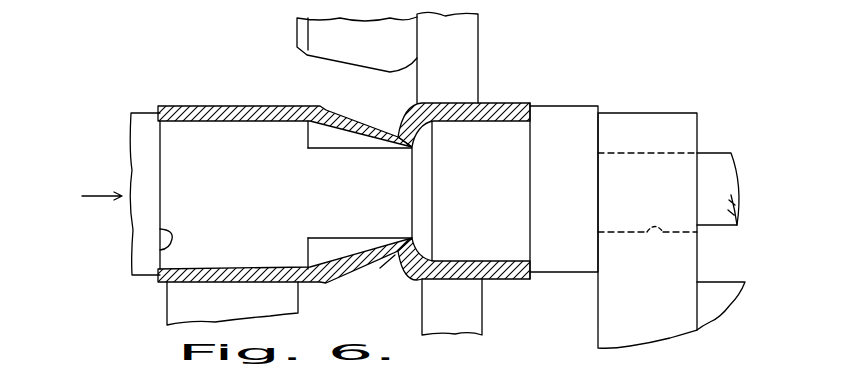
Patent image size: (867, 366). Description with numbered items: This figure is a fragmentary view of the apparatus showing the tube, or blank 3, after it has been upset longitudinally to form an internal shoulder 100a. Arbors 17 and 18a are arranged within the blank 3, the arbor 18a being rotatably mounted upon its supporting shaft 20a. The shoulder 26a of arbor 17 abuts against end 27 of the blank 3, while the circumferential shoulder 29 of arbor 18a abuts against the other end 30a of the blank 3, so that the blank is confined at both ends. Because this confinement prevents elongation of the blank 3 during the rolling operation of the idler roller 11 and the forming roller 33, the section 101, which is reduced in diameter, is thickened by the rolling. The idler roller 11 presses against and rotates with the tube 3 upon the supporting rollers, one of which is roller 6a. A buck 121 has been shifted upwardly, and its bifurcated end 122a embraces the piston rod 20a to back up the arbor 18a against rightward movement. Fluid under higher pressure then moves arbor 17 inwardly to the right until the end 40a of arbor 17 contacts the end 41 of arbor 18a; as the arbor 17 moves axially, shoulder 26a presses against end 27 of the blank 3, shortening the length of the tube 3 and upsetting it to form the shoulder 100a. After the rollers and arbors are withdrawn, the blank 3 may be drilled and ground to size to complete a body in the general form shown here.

The blank 3 is at (281, 110).
The arbor 17 is at (232, 138).
The forming roller 33 is at (322, 35).
The idler roller 11 is at (476, 43).
The arbor 18a is at (517, 137).
The end of arbor 18a 41 is at (412, 172).
The end of arbor 17 40a is at (413, 205).
The circumferential shoulder 29 is at (530, 203).
The end of blank 30a is at (532, 272).
The supporting shaft 20a is at (715, 160).
The bifurcated end 122a is at (672, 233).
The buck 121 is at (671, 230).
The shoulder 26a is at (160, 246).
The end of blank 27 is at (160, 281).
The roller 6a is at (180, 313).
The section 101 is at (380, 265).
The shoulder 100a is at (410, 275).